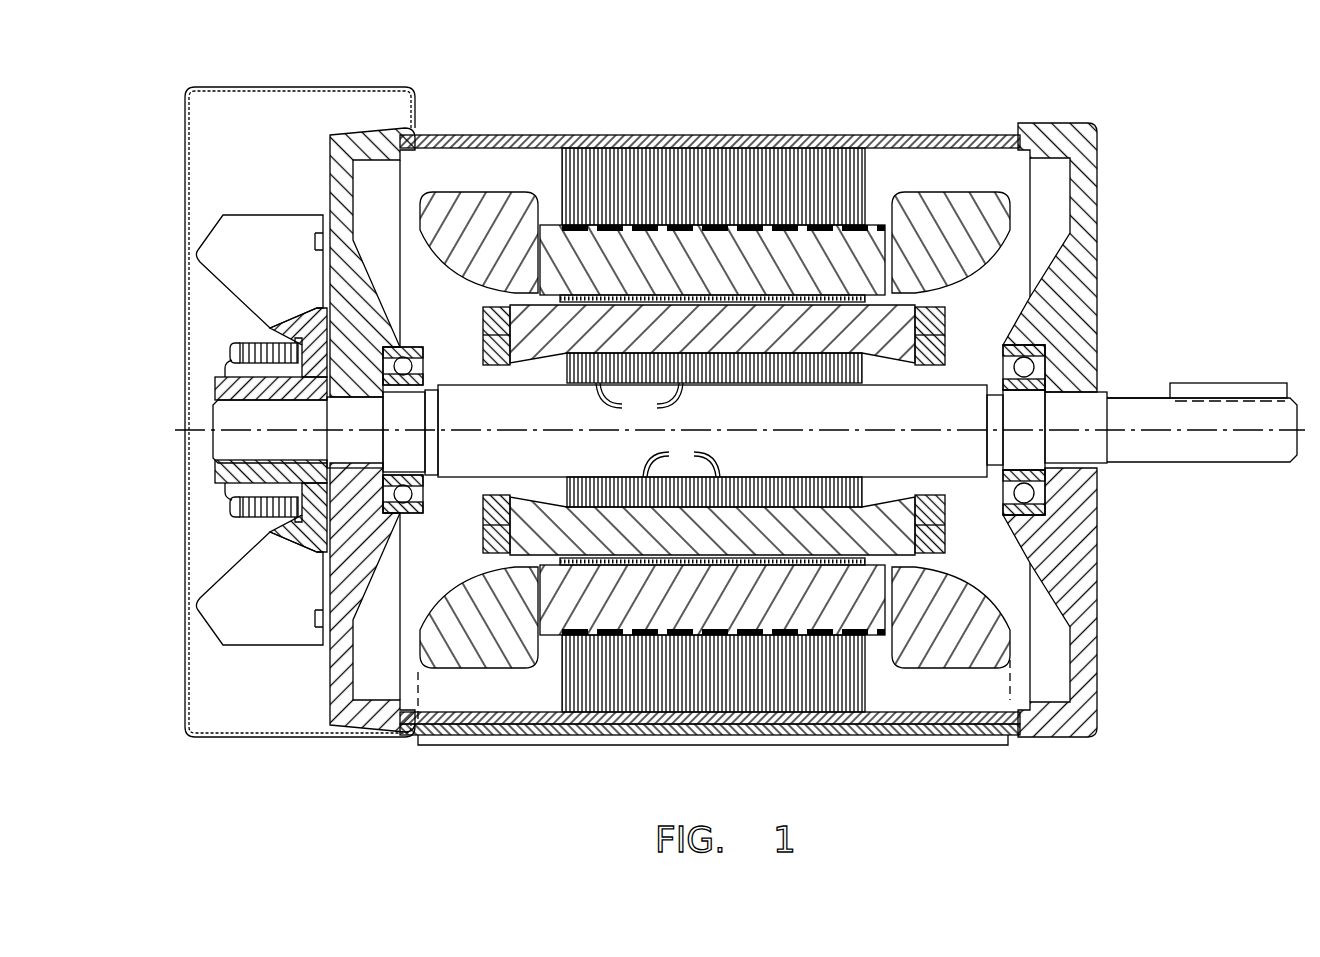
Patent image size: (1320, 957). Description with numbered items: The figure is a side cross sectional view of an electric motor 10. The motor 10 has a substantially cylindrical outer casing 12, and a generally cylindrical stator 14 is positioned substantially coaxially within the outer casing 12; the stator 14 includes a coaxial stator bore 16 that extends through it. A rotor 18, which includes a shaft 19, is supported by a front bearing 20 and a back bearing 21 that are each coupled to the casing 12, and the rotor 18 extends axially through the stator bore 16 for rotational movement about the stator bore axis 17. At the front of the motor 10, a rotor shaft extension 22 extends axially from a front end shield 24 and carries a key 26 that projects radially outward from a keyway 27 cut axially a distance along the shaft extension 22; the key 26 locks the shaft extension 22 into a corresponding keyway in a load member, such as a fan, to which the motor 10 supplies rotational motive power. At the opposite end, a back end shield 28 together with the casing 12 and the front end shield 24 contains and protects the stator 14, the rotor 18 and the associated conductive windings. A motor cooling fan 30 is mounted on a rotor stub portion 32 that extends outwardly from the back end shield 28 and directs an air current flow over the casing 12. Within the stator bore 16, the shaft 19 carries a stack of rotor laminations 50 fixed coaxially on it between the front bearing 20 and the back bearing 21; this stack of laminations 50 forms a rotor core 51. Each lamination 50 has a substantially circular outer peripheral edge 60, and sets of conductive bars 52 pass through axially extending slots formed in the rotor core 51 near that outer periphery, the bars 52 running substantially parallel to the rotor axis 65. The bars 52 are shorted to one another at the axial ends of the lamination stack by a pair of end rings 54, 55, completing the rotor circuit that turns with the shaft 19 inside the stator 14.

The electric motor 10 is at (1007, 88).
The outer casing 12 is at (692, 133).
The stator 14 is at (868, 172).
The stator bore 16 is at (693, 317).
The stator bore axis 17 is at (860, 428).
The rotor 18 is at (933, 367).
The shaft 19 is at (808, 420).
The front bearing 20 is at (1040, 395).
The back bearing 21 is at (425, 357).
The rotor shaft extension 22 is at (1155, 425).
The front end shield 24 is at (1102, 203).
The key 26 is at (1195, 383).
The keyway 27 is at (1225, 383).
The back end shield 28 is at (328, 152).
The motor cooling fan 30 is at (272, 215).
The rotor stub portion 32 is at (267, 425).
The rotor laminations 50 is at (714, 430).
The rotor core 51 is at (932, 492).
The conductive bars 52 is at (762, 340).
The end ring 54 is at (938, 310).
The end ring 55 is at (483, 318).
The outer peripheral edge 60 is at (540, 573).
The rotor axis 65 is at (948, 433).